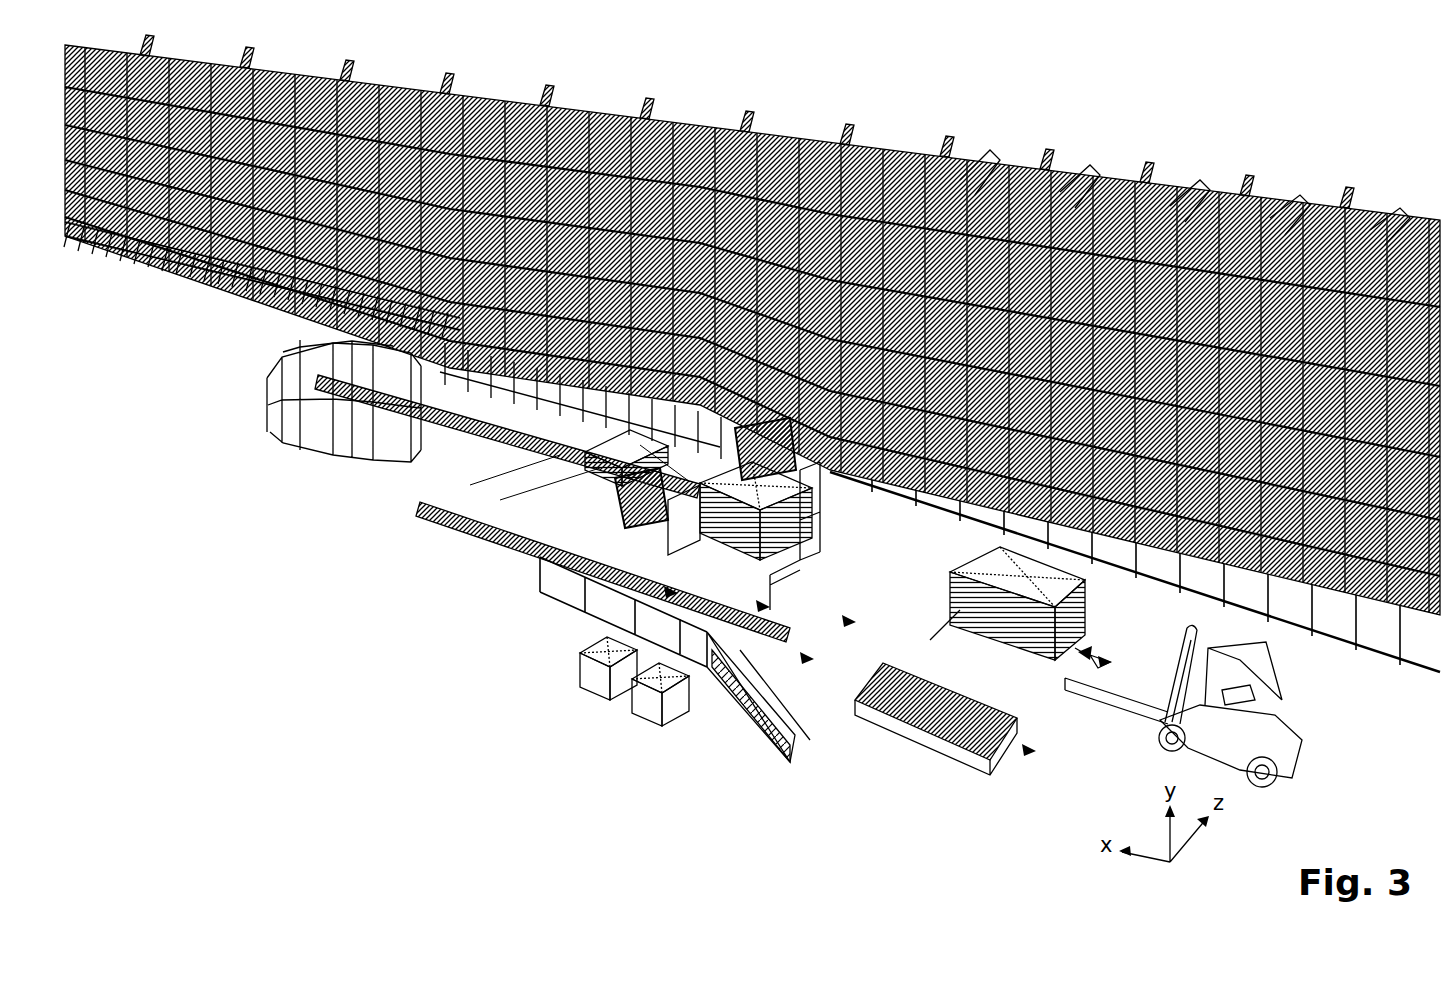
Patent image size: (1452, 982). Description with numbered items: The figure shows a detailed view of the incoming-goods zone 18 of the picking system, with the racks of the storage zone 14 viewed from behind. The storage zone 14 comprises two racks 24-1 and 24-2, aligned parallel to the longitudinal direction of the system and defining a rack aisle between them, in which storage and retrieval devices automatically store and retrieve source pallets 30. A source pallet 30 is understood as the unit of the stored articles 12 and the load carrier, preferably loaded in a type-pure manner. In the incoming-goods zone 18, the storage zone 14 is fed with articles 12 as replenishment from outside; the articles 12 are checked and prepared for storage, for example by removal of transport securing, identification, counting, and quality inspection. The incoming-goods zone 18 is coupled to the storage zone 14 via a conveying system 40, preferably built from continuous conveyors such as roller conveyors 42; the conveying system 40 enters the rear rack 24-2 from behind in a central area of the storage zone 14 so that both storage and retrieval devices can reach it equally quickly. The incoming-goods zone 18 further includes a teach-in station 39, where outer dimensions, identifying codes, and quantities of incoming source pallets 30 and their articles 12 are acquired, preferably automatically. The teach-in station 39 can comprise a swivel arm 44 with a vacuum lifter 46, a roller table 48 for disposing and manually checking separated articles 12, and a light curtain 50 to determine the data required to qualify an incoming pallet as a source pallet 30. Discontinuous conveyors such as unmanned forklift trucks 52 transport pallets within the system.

The storage zone 14 is at (830, 134).
The rack 24-1 is at (549, 106).
The rear rack 24-2 is at (174, 271).
The conveying system 40 is at (465, 451).
The roller conveyor 42 is at (508, 431).
The swivel arm 44 is at (665, 442).
The vacuum lifter 46 is at (720, 486).
The roller table 48 is at (808, 488).
The light curtain 50 is at (628, 486).
The teach-in station 39 is at (827, 507).
The source pallet 30 is at (973, 621).
The article 12 is at (1084, 606).
The incoming-goods zone 18 is at (551, 676).
The forklift truck 52 is at (1292, 742).